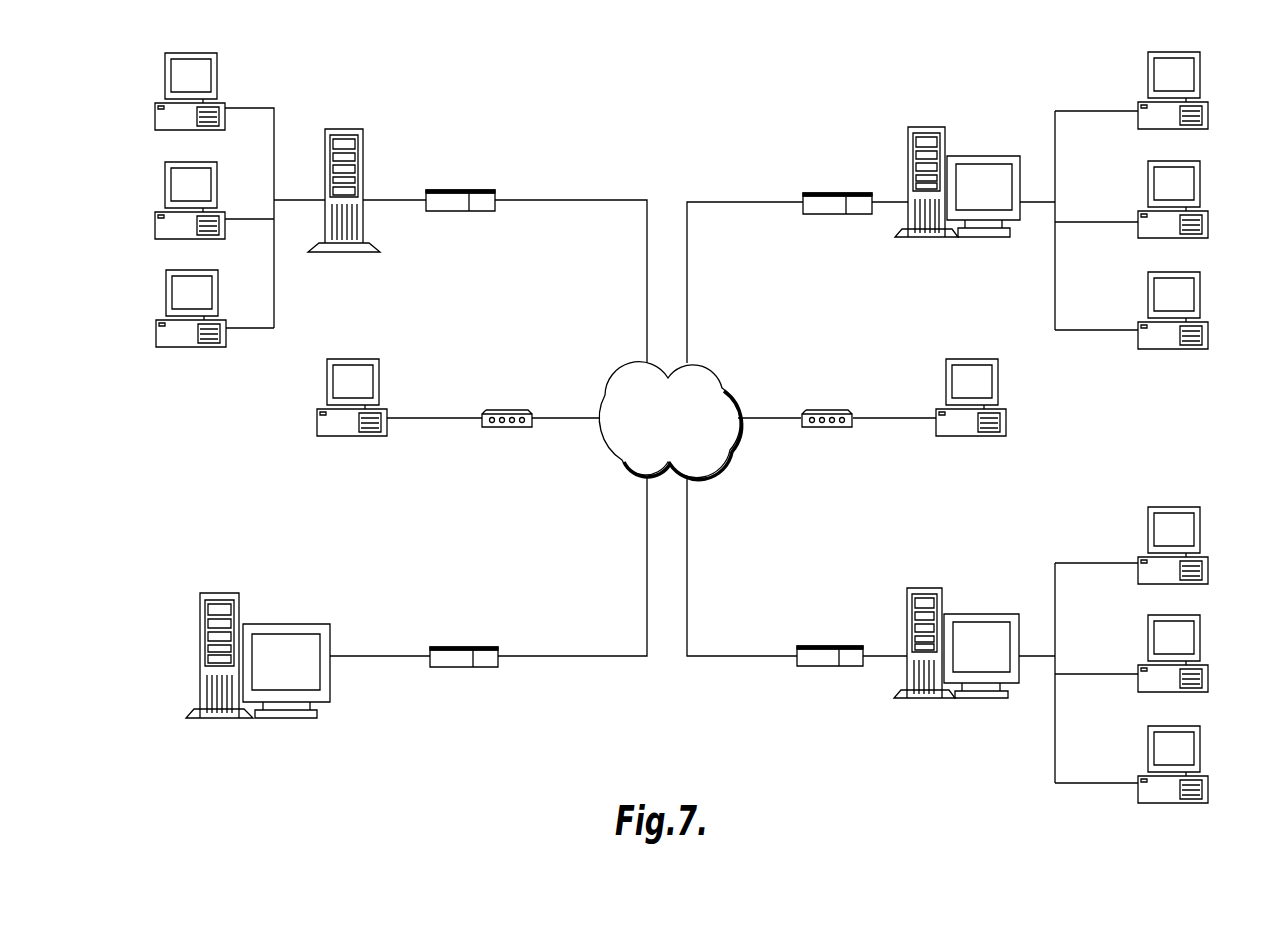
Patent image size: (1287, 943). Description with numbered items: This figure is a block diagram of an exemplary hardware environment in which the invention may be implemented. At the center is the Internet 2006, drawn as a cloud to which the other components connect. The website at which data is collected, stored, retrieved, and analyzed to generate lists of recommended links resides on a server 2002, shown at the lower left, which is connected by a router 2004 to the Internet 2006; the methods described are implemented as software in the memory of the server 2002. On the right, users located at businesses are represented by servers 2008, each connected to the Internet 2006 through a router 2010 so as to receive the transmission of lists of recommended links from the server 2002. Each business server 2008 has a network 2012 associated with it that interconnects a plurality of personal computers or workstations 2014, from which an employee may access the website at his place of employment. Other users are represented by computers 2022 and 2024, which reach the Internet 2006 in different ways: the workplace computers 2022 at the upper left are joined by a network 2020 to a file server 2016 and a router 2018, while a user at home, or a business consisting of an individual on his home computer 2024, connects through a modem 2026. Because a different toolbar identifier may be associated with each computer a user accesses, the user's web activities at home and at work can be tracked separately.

The server 2002 is at (264, 624).
The router 2004 is at (465, 647).
The Internet 2006 is at (719, 392).
The business server 2008 is at (960, 156).
The router 2010 is at (845, 193).
The network 2012 is at (1055, 122).
The personal computer or workstation 2014 is at (1200, 80).
The file server 2016 is at (365, 174).
The router 2018 is at (481, 190).
The network 2020 is at (275, 134).
The computer 2022 is at (165, 64).
The computer 2024 is at (349, 361).
The modem 2026 is at (505, 409).